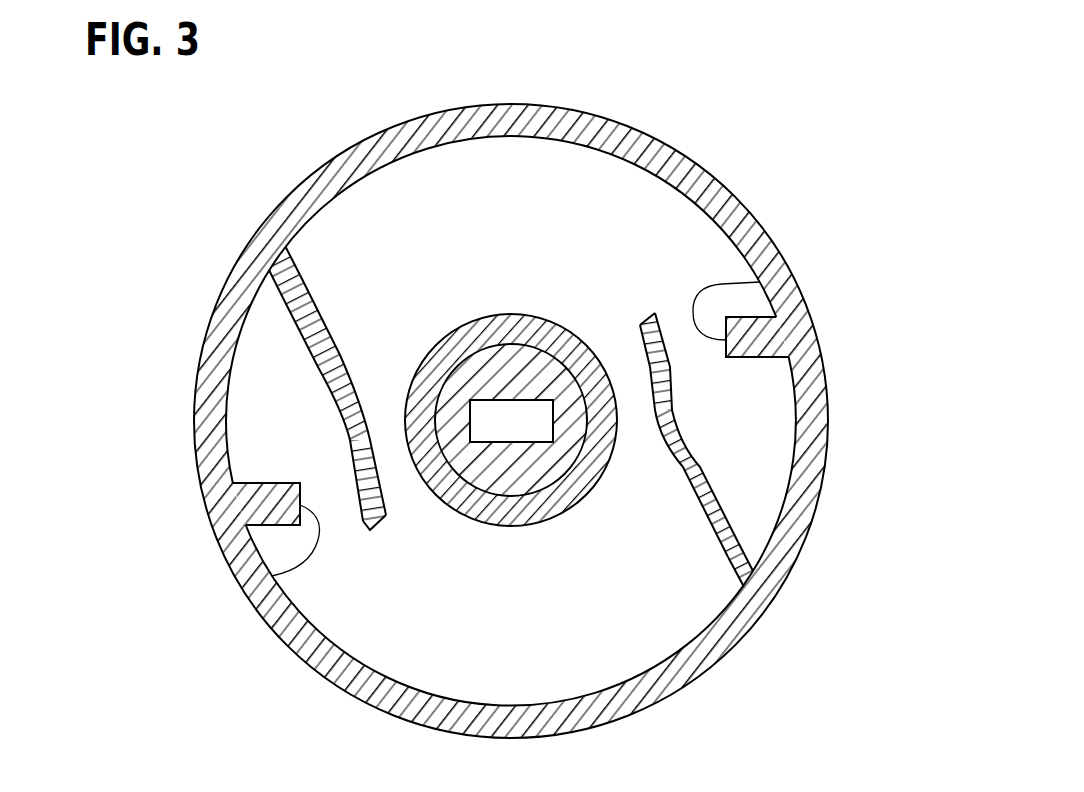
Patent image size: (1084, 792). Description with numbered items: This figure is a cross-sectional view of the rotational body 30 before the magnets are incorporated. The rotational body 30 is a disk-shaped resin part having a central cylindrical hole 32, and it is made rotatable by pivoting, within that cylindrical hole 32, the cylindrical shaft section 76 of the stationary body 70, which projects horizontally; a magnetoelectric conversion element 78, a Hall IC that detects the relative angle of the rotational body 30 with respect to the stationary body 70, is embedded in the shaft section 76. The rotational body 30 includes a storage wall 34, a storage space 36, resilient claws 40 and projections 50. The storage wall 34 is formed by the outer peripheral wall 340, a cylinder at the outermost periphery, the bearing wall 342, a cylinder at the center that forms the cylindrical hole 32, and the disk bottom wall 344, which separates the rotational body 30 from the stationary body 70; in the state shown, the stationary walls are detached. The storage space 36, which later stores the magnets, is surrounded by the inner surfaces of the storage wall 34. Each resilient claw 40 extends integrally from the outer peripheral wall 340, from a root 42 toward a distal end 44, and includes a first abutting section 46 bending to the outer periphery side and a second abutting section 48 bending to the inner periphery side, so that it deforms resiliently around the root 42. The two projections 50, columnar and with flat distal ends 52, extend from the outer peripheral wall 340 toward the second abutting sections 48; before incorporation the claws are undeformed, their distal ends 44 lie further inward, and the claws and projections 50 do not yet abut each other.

The rotational body 30 is at (779, 203).
The cylindrical hole 32 is at (462, 377).
The storage wall 34 is at (511, 392).
The outer peripheral wall 340 is at (292, 636).
The bearing wall 342 is at (520, 218).
The disk bottom wall 344 is at (427, 215).
The storage space 36 is at (568, 183).
The resilient claw 40 is at (335, 322).
The root 42 is at (278, 263).
The distal end 44 is at (378, 516).
The first abutting section 46 is at (362, 430).
The second abutting section 48 is at (357, 505).
The projection 50 is at (270, 507).
The distal end of projection 52 is at (268, 575).
The stationary body 70 is at (528, 485).
The shaft section 76 is at (511, 420).
The magnetoelectric conversion element 78 is at (498, 423).